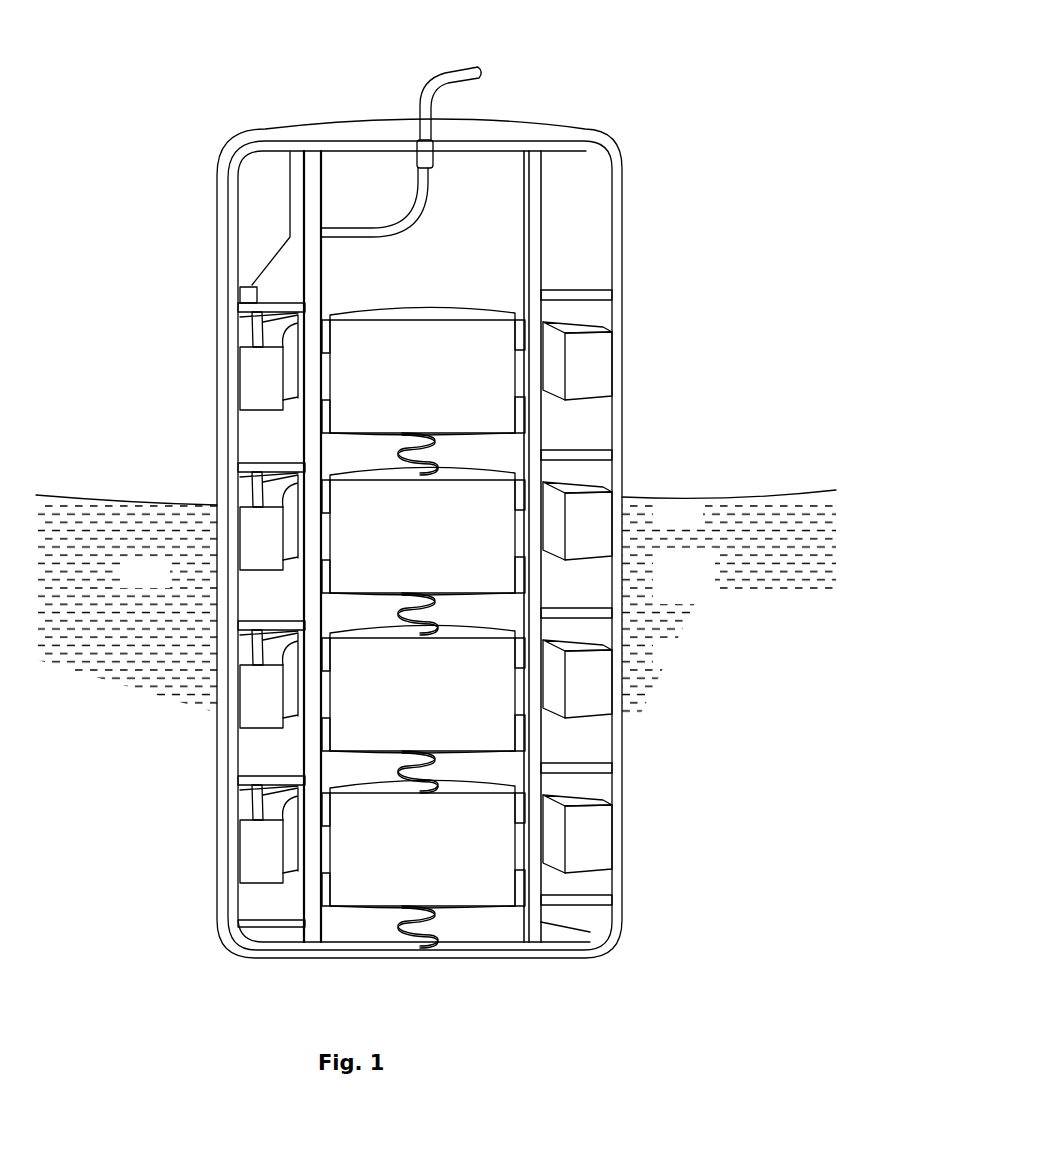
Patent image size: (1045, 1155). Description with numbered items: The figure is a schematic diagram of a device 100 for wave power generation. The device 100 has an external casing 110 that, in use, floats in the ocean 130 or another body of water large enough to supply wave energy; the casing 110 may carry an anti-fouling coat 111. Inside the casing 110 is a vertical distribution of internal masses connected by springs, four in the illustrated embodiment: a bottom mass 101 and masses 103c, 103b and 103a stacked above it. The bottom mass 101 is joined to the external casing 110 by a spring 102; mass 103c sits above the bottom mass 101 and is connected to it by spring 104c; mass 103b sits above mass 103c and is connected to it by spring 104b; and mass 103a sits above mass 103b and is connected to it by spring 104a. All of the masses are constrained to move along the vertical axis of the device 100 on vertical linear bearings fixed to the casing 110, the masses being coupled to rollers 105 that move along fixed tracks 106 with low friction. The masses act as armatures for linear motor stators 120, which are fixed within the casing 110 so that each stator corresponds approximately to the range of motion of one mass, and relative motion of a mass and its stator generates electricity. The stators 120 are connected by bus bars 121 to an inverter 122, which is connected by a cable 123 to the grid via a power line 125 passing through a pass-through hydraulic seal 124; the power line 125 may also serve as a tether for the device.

The device for wave power generation 100 is at (572, 88).
The bottom mass 101 is at (467, 892).
The spring 102 is at (418, 935).
The mass 103a is at (422, 380).
The mass 103b is at (422, 538).
The mass 103c is at (425, 700).
The spring 104a is at (425, 455).
The spring 104b is at (425, 615).
The spring 104c is at (425, 775).
The rollers 105 is at (325, 862).
The fixed tracks 106 is at (240, 940).
The external casing 110 is at (615, 193).
The anti-fouling coat 111 is at (622, 232).
The linear motor stators 120 is at (585, 375).
The bus bars 121 is at (245, 323).
The inverter 122 is at (262, 212).
The cable 123 is at (368, 233).
The pass-through hydraulic seal 124 is at (426, 148).
The power line 125 is at (436, 87).
The ocean 130 is at (718, 525).